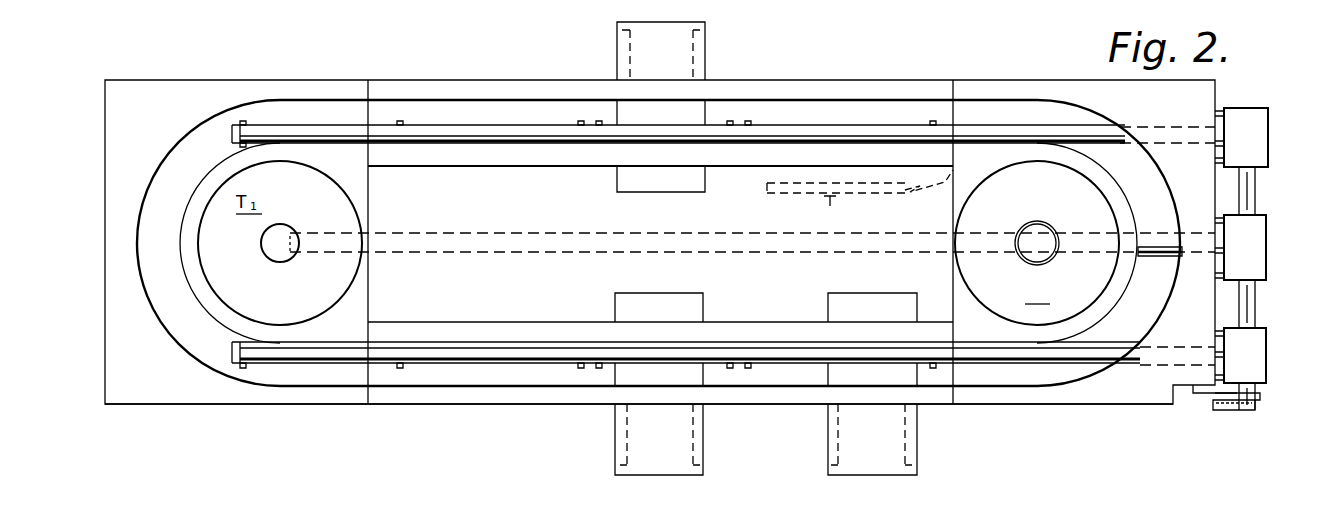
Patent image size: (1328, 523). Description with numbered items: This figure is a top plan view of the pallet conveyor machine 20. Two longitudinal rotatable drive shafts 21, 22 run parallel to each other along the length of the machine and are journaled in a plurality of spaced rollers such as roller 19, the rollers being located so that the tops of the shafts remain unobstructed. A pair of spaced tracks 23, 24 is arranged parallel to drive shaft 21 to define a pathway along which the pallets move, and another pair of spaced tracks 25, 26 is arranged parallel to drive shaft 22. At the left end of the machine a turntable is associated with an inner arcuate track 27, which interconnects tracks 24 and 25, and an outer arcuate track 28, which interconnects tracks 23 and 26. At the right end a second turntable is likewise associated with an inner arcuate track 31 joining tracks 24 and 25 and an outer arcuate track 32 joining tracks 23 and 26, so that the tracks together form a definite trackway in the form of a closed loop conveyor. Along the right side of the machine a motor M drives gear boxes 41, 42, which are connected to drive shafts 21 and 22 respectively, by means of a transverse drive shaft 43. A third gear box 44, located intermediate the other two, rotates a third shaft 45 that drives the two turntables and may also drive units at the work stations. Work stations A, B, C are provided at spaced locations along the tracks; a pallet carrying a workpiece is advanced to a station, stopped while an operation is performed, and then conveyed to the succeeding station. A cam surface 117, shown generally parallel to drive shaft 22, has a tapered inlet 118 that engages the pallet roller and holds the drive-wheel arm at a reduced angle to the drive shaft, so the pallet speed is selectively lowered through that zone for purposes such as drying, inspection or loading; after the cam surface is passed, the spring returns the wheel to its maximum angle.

The roller 19 is at (238, 146).
The machine 20 is at (320, 408).
The drive shaft 21 is at (486, 362).
The drive shaft 22 is at (472, 135).
The track 23 is at (420, 404).
The track 24 is at (428, 333).
The track 25 is at (430, 158).
The track 26 is at (409, 92).
The inner arcuate track 27 is at (209, 292).
The outer arcuate track 28 is at (233, 96).
The inner arcuate track 31 is at (1117, 308).
The outer arcuate track 32 is at (1027, 94).
The gear box 41 is at (1257, 352).
The gear box 42 is at (1257, 140).
The transverse drive shaft 43 is at (1250, 311).
The third gear box 44 is at (1257, 250).
The third shaft 45 is at (1158, 246).
The cam surface 117 is at (832, 214).
The tapered inlet 118 is at (953, 170).
The work station A is at (710, 61).
The work station B is at (710, 441).
The work station C is at (919, 462).
The motor M is at (1200, 394).